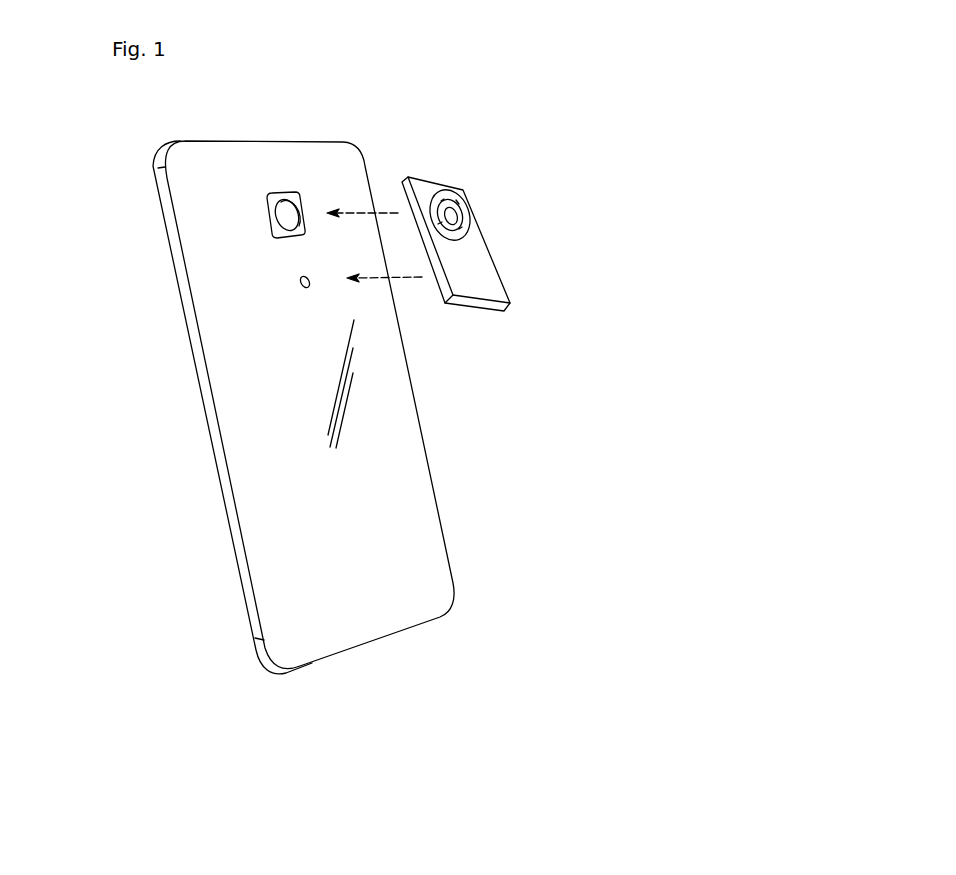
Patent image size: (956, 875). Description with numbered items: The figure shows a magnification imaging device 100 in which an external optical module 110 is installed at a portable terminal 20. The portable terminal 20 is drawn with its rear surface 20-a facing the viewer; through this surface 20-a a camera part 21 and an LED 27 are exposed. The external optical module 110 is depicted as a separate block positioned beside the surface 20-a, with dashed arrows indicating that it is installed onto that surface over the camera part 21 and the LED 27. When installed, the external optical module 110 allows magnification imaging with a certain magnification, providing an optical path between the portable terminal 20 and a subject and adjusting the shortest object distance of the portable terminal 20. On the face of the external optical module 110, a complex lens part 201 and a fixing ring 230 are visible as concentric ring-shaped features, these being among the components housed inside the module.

The magnification imaging device 100 is at (527, 737).
The portable terminal 20 is at (446, 540).
The surface 20-a is at (277, 472).
The camera part 21 is at (278, 190).
The LED 27 is at (300, 290).
The external optical module 110 is at (511, 308).
The complex lens part 201 is at (447, 193).
The fixing ring 230 is at (460, 208).